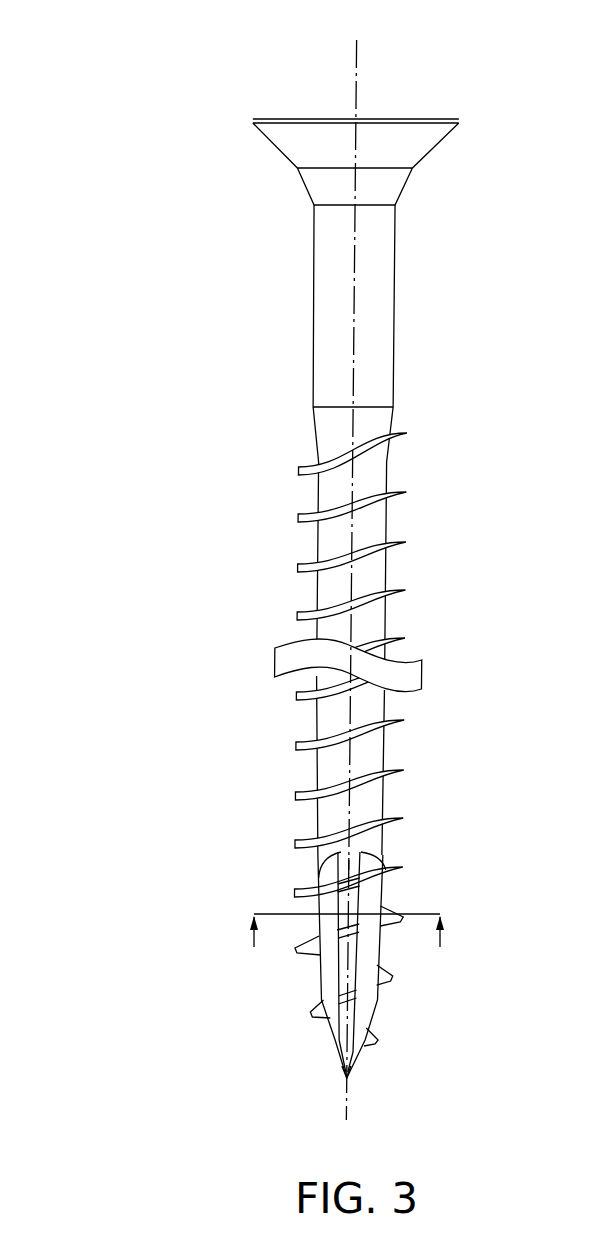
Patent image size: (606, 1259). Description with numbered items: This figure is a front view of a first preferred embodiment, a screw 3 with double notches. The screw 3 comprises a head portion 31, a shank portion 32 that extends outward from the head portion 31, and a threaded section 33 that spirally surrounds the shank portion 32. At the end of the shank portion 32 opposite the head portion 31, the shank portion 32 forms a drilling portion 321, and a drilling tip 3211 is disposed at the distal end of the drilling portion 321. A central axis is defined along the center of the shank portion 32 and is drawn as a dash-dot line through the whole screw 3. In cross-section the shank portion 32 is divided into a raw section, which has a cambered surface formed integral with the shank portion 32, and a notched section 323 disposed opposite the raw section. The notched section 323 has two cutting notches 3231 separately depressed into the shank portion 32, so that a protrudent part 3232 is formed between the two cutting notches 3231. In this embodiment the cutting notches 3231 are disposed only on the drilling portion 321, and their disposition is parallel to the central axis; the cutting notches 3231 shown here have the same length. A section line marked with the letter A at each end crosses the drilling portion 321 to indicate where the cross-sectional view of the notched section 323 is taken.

The screw 3 is at (128, 157).
The head portion 31 is at (410, 145).
The shank portion 32 is at (323, 348).
The threaded section 33 is at (310, 612).
The drilling portion 321 is at (320, 982).
The drilling tip 3211 is at (348, 1080).
The notched section 323 is at (372, 1009).
The cutting notches 3231 is at (327, 969).
The protrudent part 3232 is at (341, 1010).